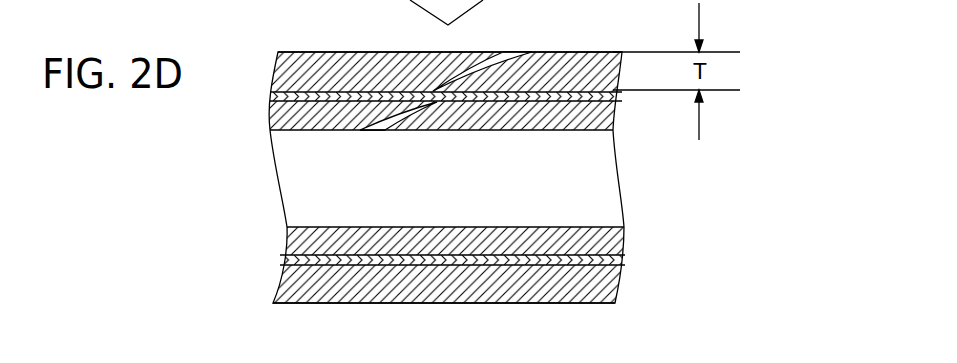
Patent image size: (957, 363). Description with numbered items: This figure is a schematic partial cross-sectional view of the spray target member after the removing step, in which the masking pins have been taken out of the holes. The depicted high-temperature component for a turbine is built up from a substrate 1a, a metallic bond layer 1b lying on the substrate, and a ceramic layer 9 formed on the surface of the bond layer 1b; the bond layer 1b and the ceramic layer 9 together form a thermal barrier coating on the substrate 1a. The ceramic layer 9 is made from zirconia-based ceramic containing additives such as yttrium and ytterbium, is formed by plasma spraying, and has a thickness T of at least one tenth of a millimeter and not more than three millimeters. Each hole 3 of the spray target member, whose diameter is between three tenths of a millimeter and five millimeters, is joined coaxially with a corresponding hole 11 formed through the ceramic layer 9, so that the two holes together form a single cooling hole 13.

The ceramic layer 9 is at (613, 68).
The substrate 1a is at (612, 112).
The bond layer 1b is at (616, 94).
The hole formed through the ceramic layer 11 is at (486, 63).
The hole 3 is at (401, 110).
The cooling hole 13 is at (435, 88).